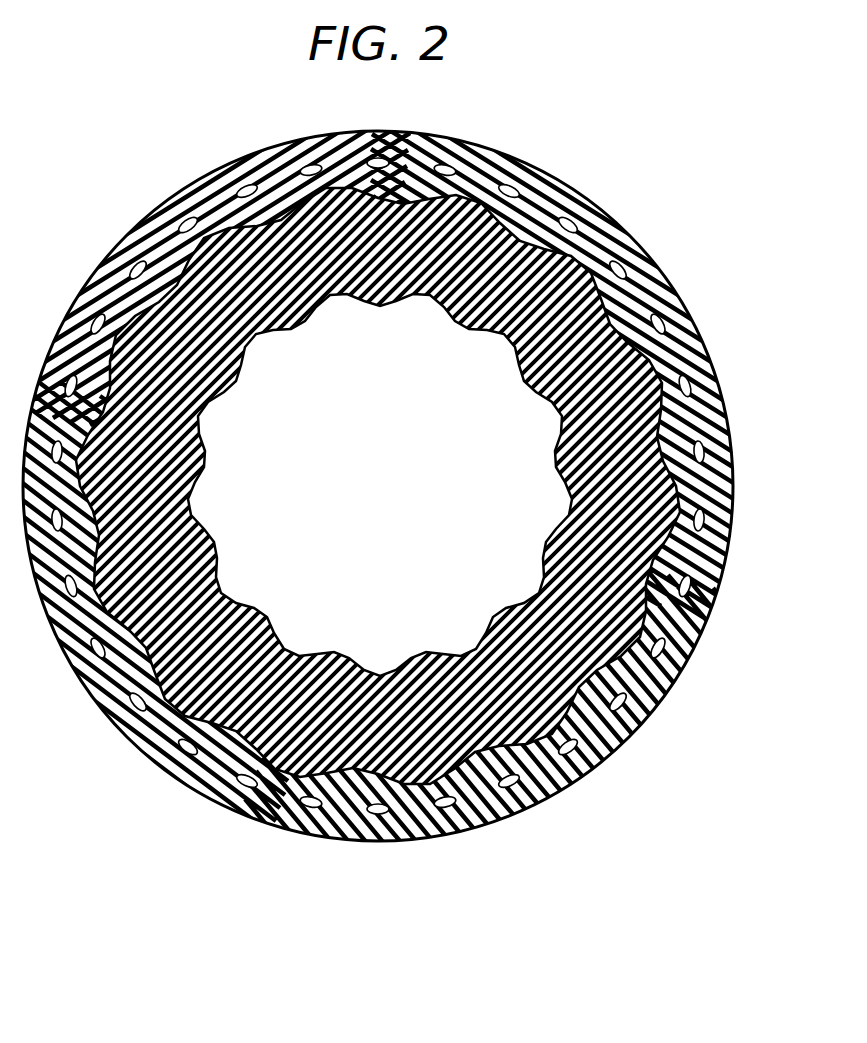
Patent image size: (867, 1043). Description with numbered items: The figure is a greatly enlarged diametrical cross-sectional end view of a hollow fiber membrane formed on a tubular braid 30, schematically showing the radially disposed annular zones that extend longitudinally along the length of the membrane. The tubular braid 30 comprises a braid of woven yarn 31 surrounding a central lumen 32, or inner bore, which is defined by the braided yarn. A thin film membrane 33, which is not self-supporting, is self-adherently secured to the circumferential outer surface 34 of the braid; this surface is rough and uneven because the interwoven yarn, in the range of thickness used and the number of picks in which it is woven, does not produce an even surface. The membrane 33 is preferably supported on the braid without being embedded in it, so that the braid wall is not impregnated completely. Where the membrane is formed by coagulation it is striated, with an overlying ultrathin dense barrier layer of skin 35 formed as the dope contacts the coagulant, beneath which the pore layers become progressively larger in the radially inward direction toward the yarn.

The tubular braid 30 is at (600, 214).
The woven yarn 31 is at (393, 338).
The lumen 32 is at (408, 507).
The thin film membrane 33 is at (388, 852).
The circumferential outer surface 34 is at (528, 772).
The skin 35 is at (130, 705).